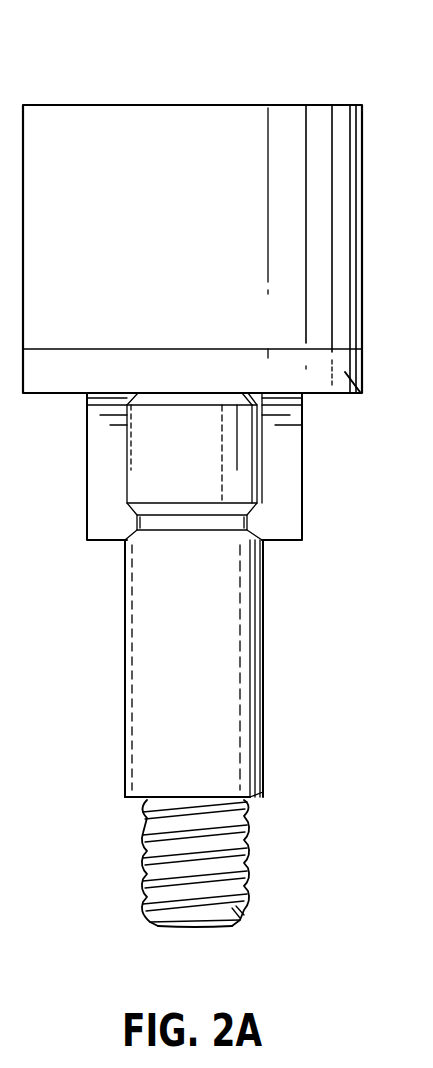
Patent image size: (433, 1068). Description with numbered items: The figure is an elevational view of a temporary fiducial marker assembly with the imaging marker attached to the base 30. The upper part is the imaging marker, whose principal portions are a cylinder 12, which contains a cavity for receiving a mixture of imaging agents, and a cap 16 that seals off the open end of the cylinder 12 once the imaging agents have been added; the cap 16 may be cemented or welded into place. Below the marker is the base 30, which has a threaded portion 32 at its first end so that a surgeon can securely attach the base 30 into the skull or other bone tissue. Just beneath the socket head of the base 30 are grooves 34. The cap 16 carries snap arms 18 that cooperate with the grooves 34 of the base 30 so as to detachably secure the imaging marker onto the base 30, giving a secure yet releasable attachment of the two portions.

The cylinder 12 is at (300, 127).
The cap 16 is at (360, 393).
The snap arms 18 is at (278, 540).
The base 30 is at (262, 727).
The threaded portion 32 is at (245, 887).
The grooves 34 is at (113, 541).